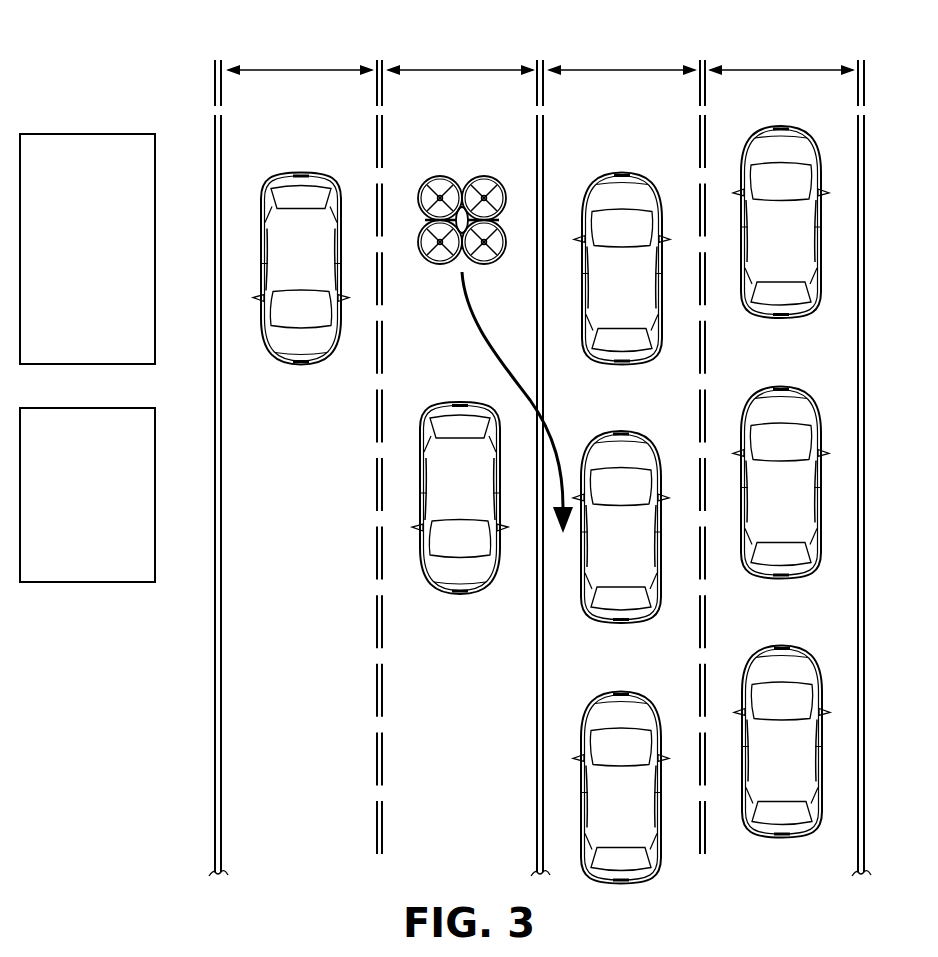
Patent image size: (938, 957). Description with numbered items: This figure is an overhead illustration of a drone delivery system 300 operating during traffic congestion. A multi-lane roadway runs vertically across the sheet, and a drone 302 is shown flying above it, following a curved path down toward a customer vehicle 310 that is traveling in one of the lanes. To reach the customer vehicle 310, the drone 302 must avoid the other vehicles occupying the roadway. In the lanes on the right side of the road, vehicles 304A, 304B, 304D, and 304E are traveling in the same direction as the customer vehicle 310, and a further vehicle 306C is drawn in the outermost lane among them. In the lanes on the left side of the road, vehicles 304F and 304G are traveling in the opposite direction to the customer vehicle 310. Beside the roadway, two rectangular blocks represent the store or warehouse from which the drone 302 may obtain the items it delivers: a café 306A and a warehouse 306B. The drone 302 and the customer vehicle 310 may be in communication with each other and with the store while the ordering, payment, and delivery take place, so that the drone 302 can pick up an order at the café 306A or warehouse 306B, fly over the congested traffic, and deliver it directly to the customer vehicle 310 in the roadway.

The drone delivery system 300 is at (176, 53).
The drone 302 is at (483, 175).
The vehicle 304A is at (650, 172).
The vehicle 304B is at (812, 127).
The vehicle 304D is at (812, 645).
The vehicle 304E is at (650, 692).
The vehicle 304F is at (318, 172).
The vehicle 304G is at (480, 403).
The café 306A is at (87, 249).
The warehouse 306B is at (87, 495).
The target object vehicle 306C is at (812, 387).
The customer vehicle 310 is at (650, 432).